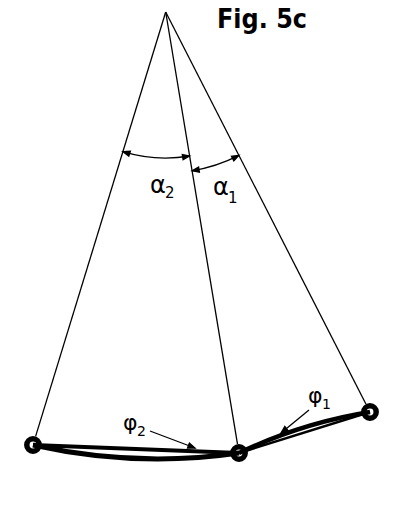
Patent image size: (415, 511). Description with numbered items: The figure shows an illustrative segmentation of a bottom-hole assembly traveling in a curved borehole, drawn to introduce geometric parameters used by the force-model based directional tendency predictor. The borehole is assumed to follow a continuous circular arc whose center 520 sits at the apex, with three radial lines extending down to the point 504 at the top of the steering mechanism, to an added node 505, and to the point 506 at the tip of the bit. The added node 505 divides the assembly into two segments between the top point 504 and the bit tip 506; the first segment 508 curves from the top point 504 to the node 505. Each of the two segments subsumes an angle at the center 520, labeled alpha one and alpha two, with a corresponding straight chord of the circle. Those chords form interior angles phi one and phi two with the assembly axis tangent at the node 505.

The center 520 is at (163, 15).
The point at top of steering mechanism 504 is at (33, 454).
The added node 505 is at (239, 462).
The point at tip of the bit 506 is at (368, 421).
The segment 508 is at (162, 466).